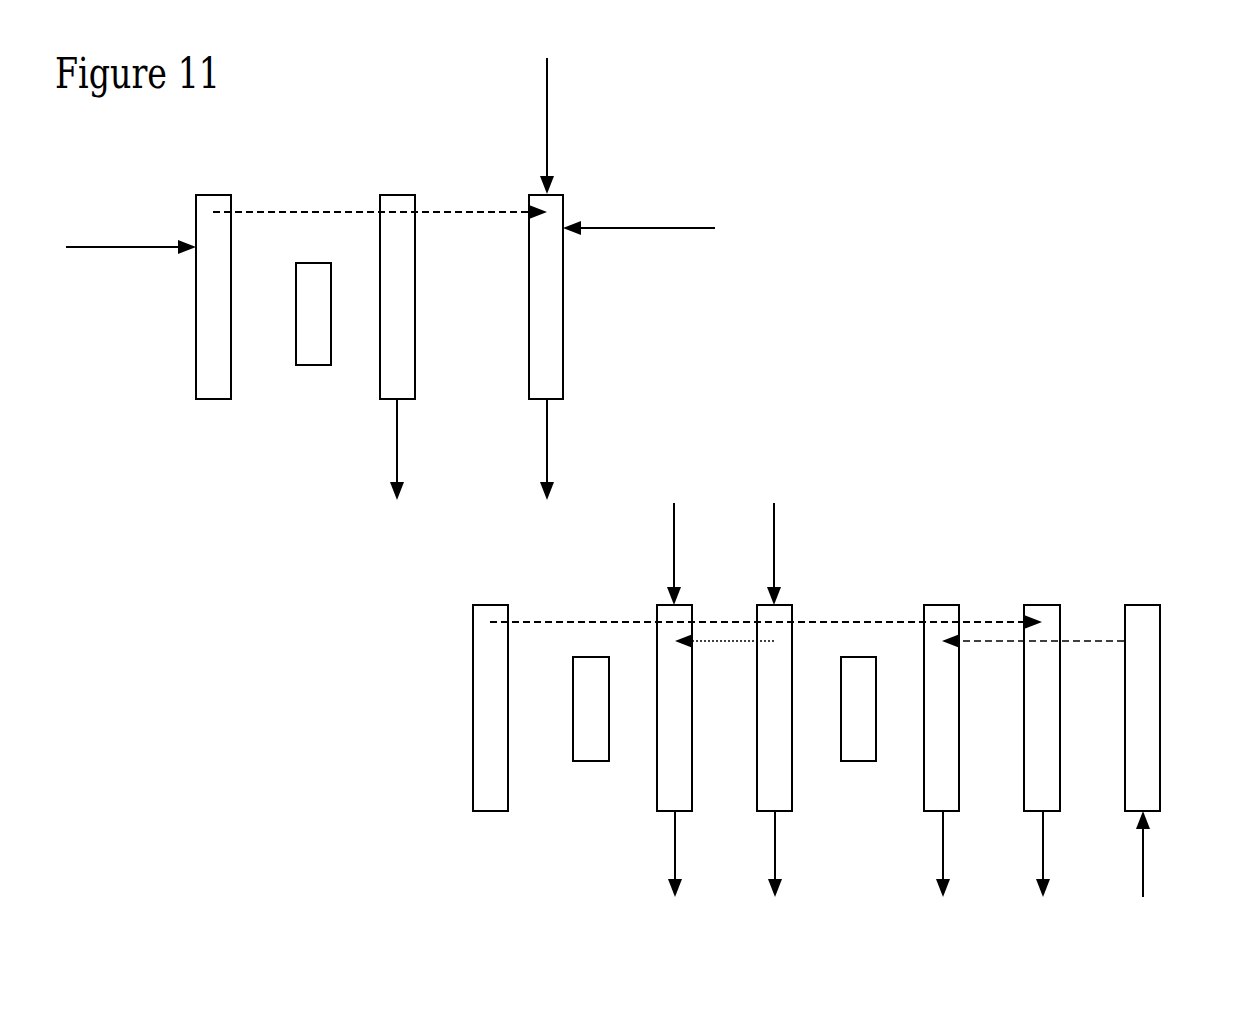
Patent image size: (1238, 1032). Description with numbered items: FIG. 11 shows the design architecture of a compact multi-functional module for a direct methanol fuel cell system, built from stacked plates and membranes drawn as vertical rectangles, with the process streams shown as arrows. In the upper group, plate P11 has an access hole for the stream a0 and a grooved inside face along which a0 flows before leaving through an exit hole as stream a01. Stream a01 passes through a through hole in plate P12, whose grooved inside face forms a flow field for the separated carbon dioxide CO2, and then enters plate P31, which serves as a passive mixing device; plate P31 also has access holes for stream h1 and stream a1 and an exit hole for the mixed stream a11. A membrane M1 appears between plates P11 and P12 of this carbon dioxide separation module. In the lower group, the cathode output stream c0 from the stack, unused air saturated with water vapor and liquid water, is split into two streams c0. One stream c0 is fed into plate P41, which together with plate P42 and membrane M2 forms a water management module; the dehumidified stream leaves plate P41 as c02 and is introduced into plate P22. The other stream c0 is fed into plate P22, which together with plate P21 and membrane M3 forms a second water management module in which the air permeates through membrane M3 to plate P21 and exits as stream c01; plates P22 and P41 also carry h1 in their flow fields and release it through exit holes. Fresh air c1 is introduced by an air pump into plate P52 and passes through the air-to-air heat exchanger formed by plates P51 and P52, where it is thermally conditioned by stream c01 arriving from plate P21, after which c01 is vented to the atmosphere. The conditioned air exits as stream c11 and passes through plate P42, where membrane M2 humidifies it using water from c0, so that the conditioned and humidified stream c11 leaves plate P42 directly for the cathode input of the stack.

The plate P11 is at (192, 297).
The first heat exchanger / membrane unit M1 is at (298, 314).
The plate P12 is at (374, 297).
The plate P31 is at (525, 297).
The plate P21 is at (470, 708).
The membrane M3 is at (574, 709).
The plate P22 is at (656, 708).
The plate P41 is at (756, 708).
The membrane M2 is at (842, 709).
The plate P42 is at (919, 708).
The plate P51 is at (1023, 708).
The plate P52 is at (1122, 708).
The stream a0 is at (121, 238).
The stream a01 is at (380, 207).
The stream a1 is at (639, 215).
The stream a11 is at (528, 449).
The stream h1 is at (647, 482).
The carbon dioxide CO2 is at (373, 449).
The cathode output stream c0 is at (710, 554).
The stream c01 is at (770, 753).
The stream c02 is at (724, 654).
The stream c11 is at (1010, 770).
The stream c1 is at (1130, 859).